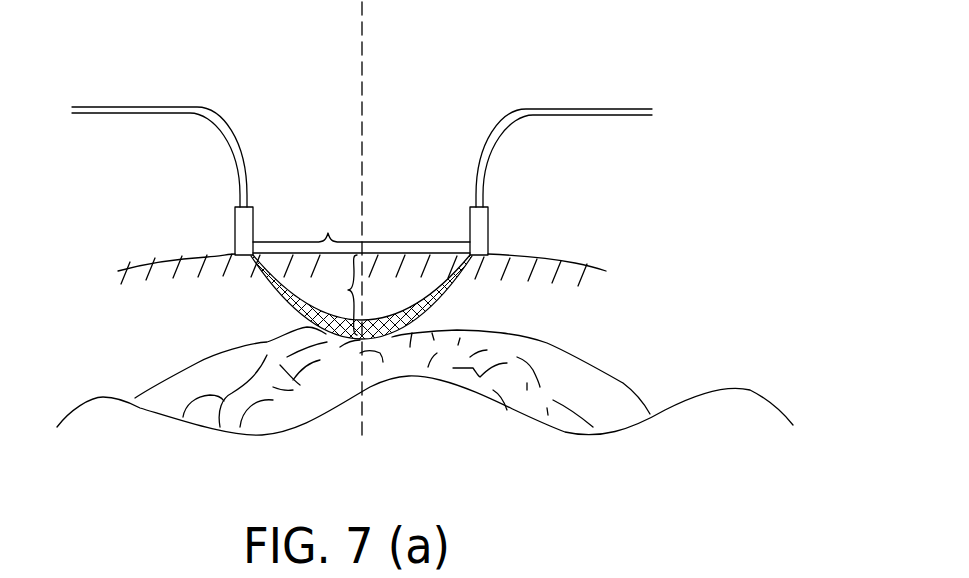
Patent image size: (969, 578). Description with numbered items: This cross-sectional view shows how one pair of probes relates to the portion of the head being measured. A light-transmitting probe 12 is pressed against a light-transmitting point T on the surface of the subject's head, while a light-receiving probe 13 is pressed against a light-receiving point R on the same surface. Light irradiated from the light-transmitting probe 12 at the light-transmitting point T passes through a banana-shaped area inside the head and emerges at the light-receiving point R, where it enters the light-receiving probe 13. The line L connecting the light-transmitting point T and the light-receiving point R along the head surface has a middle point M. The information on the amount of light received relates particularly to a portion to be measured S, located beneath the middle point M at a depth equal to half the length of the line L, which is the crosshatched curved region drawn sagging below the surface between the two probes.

The light-transmitting probe 12 is at (235, 222).
The light-receiving probe 13 is at (489, 220).
The middle point M is at (372, 248).
The light-transmitting point T is at (231, 250).
The light-receiving point R is at (493, 250).
The portion to be measured S is at (378, 330).
The line connecting the light-transmitting point and the light-receiving point L is at (361, 229).